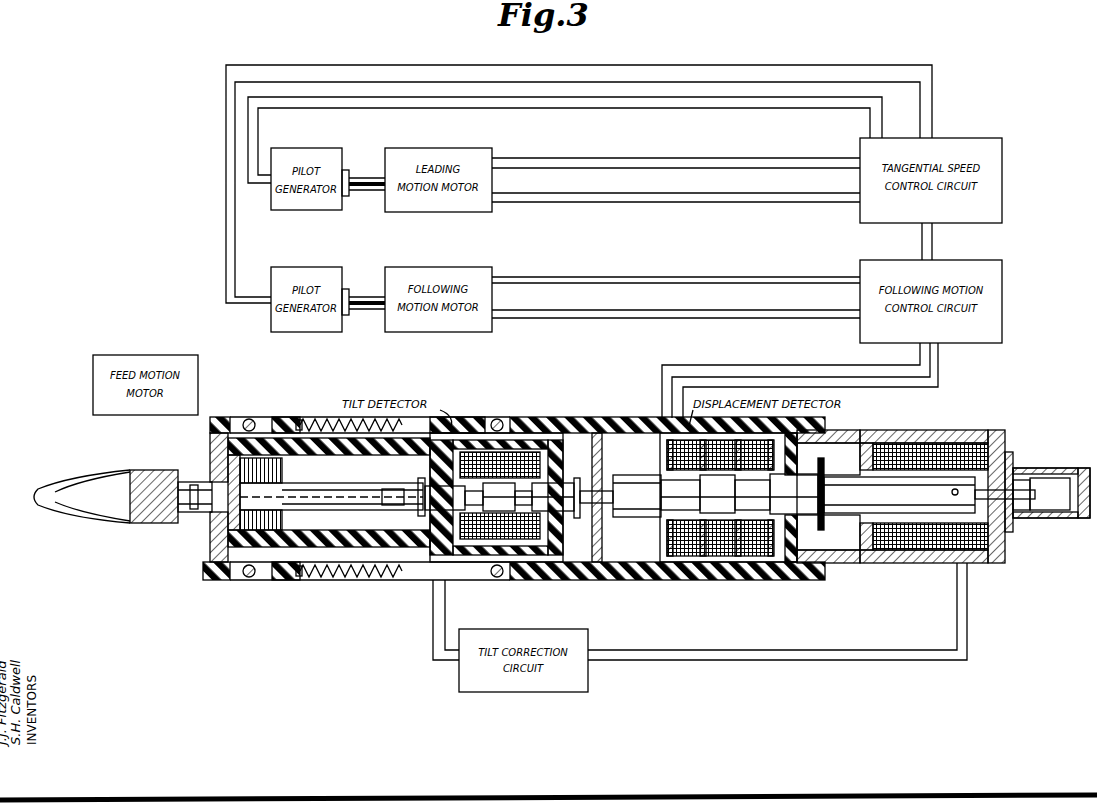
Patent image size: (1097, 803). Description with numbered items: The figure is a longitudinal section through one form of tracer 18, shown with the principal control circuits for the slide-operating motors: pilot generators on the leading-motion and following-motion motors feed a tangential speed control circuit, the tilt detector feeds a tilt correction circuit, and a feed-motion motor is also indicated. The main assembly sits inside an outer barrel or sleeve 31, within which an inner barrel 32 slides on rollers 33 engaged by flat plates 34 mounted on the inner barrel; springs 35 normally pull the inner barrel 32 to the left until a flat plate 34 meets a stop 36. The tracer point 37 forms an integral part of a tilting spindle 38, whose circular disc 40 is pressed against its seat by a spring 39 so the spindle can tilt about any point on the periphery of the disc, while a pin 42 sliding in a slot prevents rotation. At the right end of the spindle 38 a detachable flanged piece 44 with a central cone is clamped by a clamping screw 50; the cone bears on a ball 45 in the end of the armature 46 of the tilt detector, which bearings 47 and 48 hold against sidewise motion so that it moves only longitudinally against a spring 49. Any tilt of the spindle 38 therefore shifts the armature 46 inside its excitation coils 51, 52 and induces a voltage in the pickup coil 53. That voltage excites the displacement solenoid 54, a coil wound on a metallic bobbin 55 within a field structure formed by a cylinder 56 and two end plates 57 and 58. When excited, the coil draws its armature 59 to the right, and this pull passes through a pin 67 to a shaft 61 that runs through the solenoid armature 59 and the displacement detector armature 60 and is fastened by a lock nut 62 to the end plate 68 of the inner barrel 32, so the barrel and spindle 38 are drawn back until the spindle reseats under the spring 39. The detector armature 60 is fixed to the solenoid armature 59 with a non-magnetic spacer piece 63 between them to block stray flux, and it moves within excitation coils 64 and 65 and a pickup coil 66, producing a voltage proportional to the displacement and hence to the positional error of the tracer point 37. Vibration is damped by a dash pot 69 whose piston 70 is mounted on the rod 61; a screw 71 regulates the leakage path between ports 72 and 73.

The tracer 18 is at (515, 418).
The outer barrel 31 is at (610, 580).
The inner barrel 32 is at (350, 566).
The rollers 33 is at (248, 577).
The flat plates 34 is at (233, 580).
The springs 35 is at (336, 424).
The stop 36 is at (205, 573).
The tracer point 37 is at (126, 470).
The tilting spindle 38 is at (362, 510).
The spring 39 is at (283, 512).
The circular disc 40 is at (205, 520).
The pin 42 is at (210, 470).
The flanged piece 44 is at (422, 506).
The ball 45 is at (420, 492).
The armature of the tilt detector 46 is at (426, 434).
The bearing 47 is at (400, 570).
The bearing 48 is at (555, 580).
The spring 49 is at (578, 514).
The clamping screw 50 is at (388, 506).
The excitation coil 51 is at (530, 578).
The excitation coil 52 is at (432, 572).
The pickup coil 53 is at (456, 572).
The displacement solenoid 54 is at (983, 434).
The metallic bobbin 55 is at (942, 438).
The cylinder 56 is at (906, 436).
The end plate 57 is at (1010, 436).
The end plate 58 is at (863, 562).
The solenoid armature 59 is at (856, 490).
The displacement detector armature 60 is at (641, 478).
The shaft 61 is at (1020, 502).
The lock nut 62 is at (598, 468).
The non-magnetic spacer piece 63 is at (822, 528).
The excitation coil 64 is at (748, 580).
The excitation coil 65 is at (672, 580).
The pickup coil 66 is at (710, 580).
The pin 67 is at (952, 491).
The end plate of the inner barrel 68 is at (600, 420).
The dash pot 69 is at (1056, 470).
The piston 70 is at (1040, 520).
The screw 71 is at (1086, 470).
The port 72 is at (1078, 494).
The port 73 is at (1082, 520).